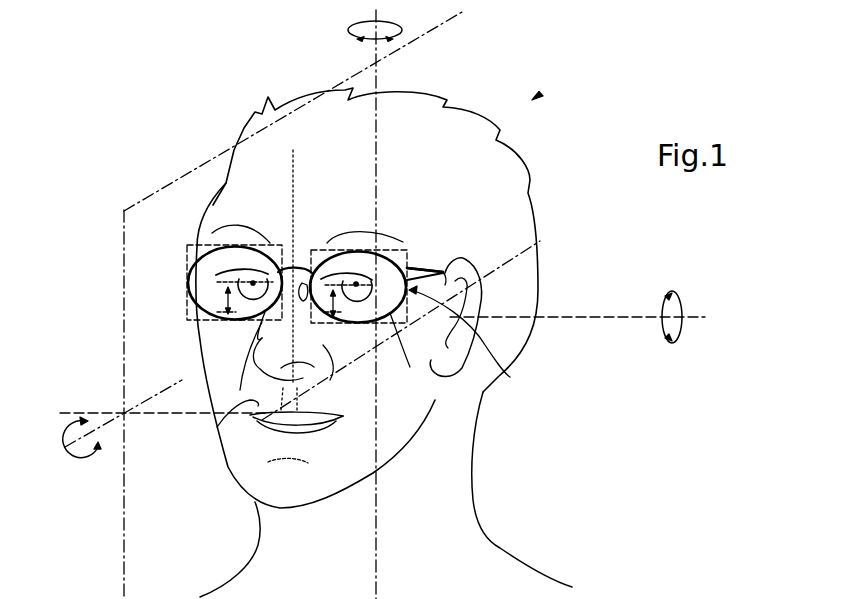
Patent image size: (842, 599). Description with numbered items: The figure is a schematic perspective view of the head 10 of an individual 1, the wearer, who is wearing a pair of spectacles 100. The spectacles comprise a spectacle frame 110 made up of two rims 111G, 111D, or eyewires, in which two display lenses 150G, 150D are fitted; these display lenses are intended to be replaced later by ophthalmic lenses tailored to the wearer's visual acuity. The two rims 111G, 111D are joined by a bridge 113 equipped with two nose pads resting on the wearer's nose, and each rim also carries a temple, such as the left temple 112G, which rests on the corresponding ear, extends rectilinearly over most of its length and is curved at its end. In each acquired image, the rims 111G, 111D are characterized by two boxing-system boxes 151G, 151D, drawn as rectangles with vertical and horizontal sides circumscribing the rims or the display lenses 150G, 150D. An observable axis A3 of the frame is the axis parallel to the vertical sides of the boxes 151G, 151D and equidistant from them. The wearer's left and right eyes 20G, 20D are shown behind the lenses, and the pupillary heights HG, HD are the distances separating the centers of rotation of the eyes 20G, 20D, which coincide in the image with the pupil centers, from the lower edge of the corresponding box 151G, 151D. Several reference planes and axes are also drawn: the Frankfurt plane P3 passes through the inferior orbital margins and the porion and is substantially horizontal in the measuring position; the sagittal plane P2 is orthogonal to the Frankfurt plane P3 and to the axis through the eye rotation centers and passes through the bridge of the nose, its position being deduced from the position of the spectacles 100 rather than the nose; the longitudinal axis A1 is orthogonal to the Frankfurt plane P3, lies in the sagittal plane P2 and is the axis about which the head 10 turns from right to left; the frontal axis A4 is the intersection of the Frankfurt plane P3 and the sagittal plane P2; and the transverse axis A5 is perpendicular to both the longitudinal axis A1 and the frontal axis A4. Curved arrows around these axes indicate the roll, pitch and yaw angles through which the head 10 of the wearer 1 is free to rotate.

The individual 1 is at (534, 98).
The head 10 is at (545, 199).
The pair of spectacles 100 is at (505, 378).
The spectacle frame 110 is at (422, 255).
The right rim 111D is at (200, 252).
The left rim 111G is at (419, 257).
The left temple 112G is at (440, 260).
The bridge 113 is at (304, 264).
The right display lens 150D is at (238, 248).
The left display lens 150G is at (386, 270).
The right boxing-system box 151D is at (188, 310).
The left boxing-system box 151G is at (383, 305).
The right eye 20D is at (254, 300).
The left eye 20G is at (338, 246).
The right pupillary height HD is at (227, 311).
The left pupillary height HG is at (336, 305).
The longitudinal axis A1 is at (375, 566).
The observable axis A3 is at (293, 152).
The frontal axis A4 is at (100, 430).
The transverse axis A5 is at (585, 318).
The sagittal plane P2 is at (162, 188).
The Frankfurt plane P3 is at (247, 413).